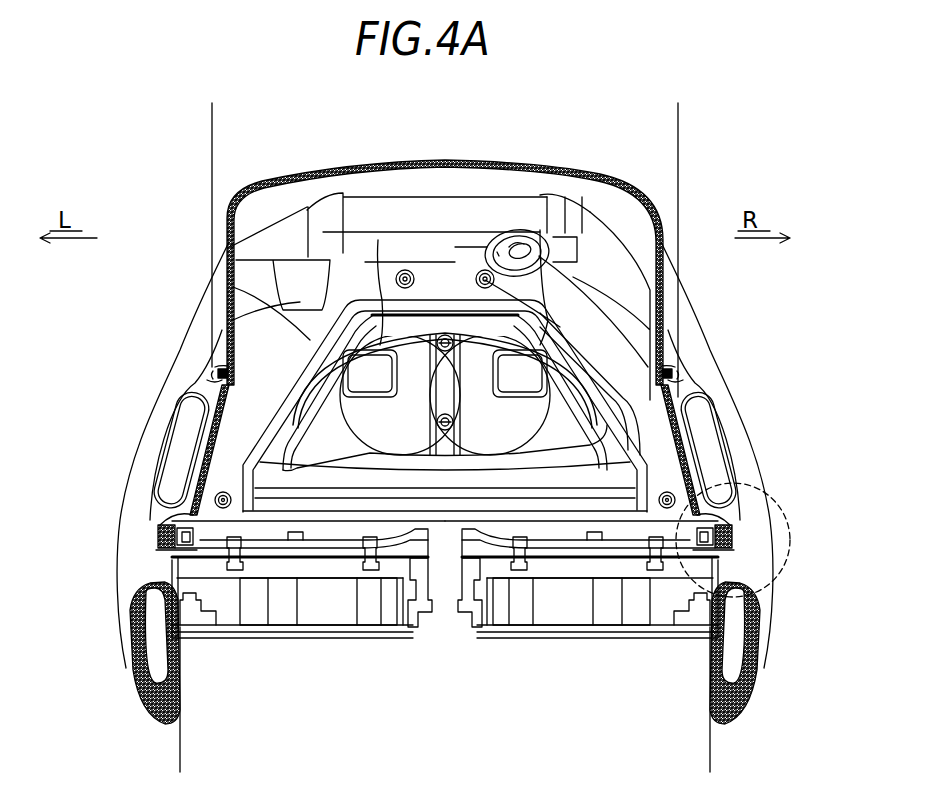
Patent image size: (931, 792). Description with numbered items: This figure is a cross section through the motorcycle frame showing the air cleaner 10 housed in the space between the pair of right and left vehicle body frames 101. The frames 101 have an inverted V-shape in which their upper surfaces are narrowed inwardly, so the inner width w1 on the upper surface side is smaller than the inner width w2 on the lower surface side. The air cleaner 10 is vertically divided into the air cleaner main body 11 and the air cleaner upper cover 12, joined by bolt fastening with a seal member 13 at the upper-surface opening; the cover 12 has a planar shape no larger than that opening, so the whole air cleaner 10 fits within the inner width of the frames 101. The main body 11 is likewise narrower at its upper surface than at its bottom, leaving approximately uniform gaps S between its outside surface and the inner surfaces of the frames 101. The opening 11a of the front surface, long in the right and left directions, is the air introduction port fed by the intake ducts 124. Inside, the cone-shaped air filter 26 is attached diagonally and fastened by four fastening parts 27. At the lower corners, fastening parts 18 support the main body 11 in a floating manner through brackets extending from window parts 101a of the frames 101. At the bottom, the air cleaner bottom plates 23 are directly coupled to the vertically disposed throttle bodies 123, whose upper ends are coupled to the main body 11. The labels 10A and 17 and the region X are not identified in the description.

The air cleaner 10 is at (700, 198).
The clip / attachment portion 10A is at (219, 372).
The air cleaner main body 11 is at (215, 425).
The opening of the front surface 11a is at (638, 455).
The air cleaner upper cover 12 is at (283, 181).
The seal member 13 is at (213, 380).
The mounting part 17 is at (390, 418).
The fastening part 18 is at (742, 547).
The air cleaner bottom plate 23 is at (293, 557).
The air filter 26 is at (292, 372).
The fastening part 27 is at (485, 270).
The vehicle body frame 101 is at (724, 397).
The window part 101a is at (757, 565).
The throttle body 123 is at (337, 605).
The intake duct 124 is at (378, 240).
The gap S is at (684, 442).
The detail region X is at (790, 497).
The inner width on the upper surface side w1 is at (668, 118).
The inner width on the lower surface side w2 is at (700, 767).